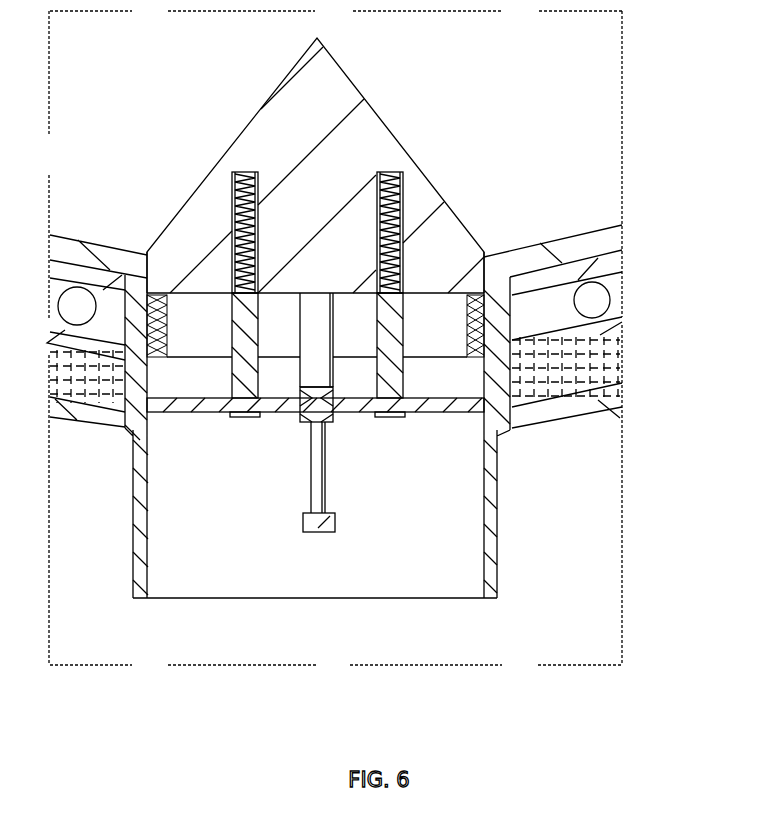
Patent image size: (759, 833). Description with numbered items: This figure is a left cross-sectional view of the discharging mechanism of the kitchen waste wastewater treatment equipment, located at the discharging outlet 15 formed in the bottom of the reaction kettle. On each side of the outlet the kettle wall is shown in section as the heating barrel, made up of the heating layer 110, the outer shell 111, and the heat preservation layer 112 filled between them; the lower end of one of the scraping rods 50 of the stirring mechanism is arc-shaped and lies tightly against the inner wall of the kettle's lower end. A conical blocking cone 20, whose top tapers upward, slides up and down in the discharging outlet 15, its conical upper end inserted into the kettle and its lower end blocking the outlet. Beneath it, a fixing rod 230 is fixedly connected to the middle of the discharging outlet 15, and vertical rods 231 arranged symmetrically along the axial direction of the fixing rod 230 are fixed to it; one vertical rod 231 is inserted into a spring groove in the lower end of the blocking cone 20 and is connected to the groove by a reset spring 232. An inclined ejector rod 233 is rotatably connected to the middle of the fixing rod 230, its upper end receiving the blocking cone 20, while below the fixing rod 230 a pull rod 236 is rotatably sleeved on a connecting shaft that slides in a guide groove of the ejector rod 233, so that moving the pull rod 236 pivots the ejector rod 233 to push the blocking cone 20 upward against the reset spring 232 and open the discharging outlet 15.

The blocking cone 20 is at (287, 118).
The reset spring 232 is at (233, 205).
The vertical rods 231 is at (387, 373).
The fixing rod 230 is at (173, 405).
The ejector rod 233 is at (323, 360).
The pull rod 236 is at (320, 523).
The discharging outlet 15 is at (427, 578).
The scraping rods 50 is at (608, 237).
The heating layer 110 is at (592, 298).
The heat preservation layer 112 is at (612, 365).
The shell 111 is at (598, 403).